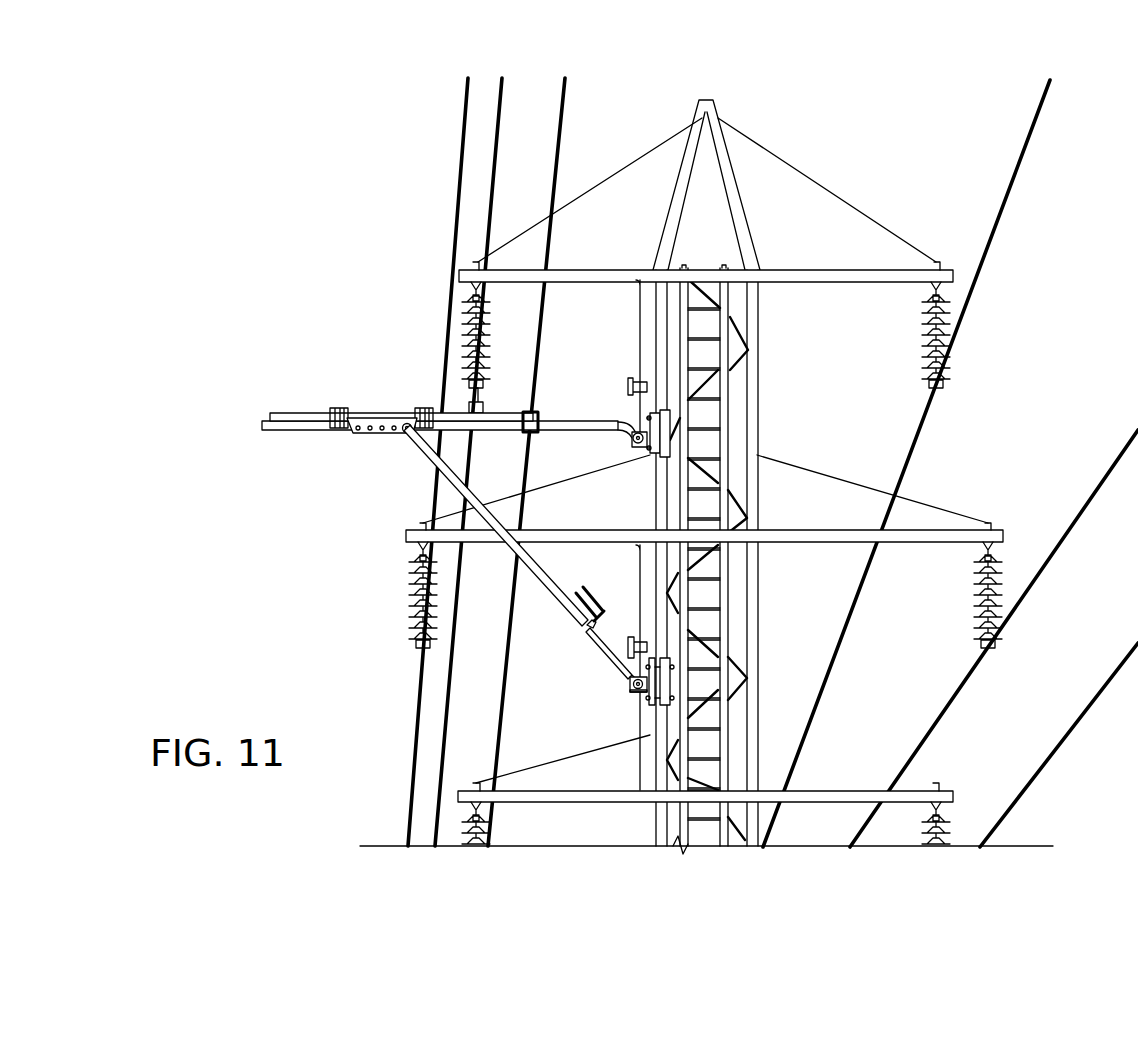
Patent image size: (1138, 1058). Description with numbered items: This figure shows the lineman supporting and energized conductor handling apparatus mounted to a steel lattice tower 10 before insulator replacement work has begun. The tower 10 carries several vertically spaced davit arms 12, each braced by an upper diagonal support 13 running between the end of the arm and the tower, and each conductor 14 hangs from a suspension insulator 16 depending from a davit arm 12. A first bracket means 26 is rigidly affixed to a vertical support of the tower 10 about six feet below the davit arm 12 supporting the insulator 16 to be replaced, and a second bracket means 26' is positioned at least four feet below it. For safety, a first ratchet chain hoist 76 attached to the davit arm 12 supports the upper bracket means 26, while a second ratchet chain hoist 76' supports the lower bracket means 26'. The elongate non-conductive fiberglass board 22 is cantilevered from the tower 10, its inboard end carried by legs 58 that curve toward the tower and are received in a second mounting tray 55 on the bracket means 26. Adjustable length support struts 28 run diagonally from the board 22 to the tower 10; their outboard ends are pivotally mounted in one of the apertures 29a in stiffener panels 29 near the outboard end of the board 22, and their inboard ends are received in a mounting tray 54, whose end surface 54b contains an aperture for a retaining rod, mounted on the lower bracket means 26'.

The steel lattice tower 10 is at (849, 144).
The davit arm 12 is at (607, 268).
The upper diagonal support 13 is at (860, 209).
The conductor 14 is at (497, 147).
The suspension insulator 16 is at (462, 333).
The board 22 is at (275, 408).
The bracket means 26 is at (636, 464).
The bracket means 26' is at (629, 705).
The adjustable length support strut 28 is at (559, 598).
The stiffener panel 29 is at (377, 418).
The aperture 29a is at (406, 433).
The mounting tray 54 is at (632, 686).
The end surface 54b is at (636, 688).
The second mounting tray 55 is at (633, 441).
The leg 58 is at (622, 422).
The ratchet chain hoist 76 is at (607, 363).
The ratchet chain hoist 76' is at (602, 666).